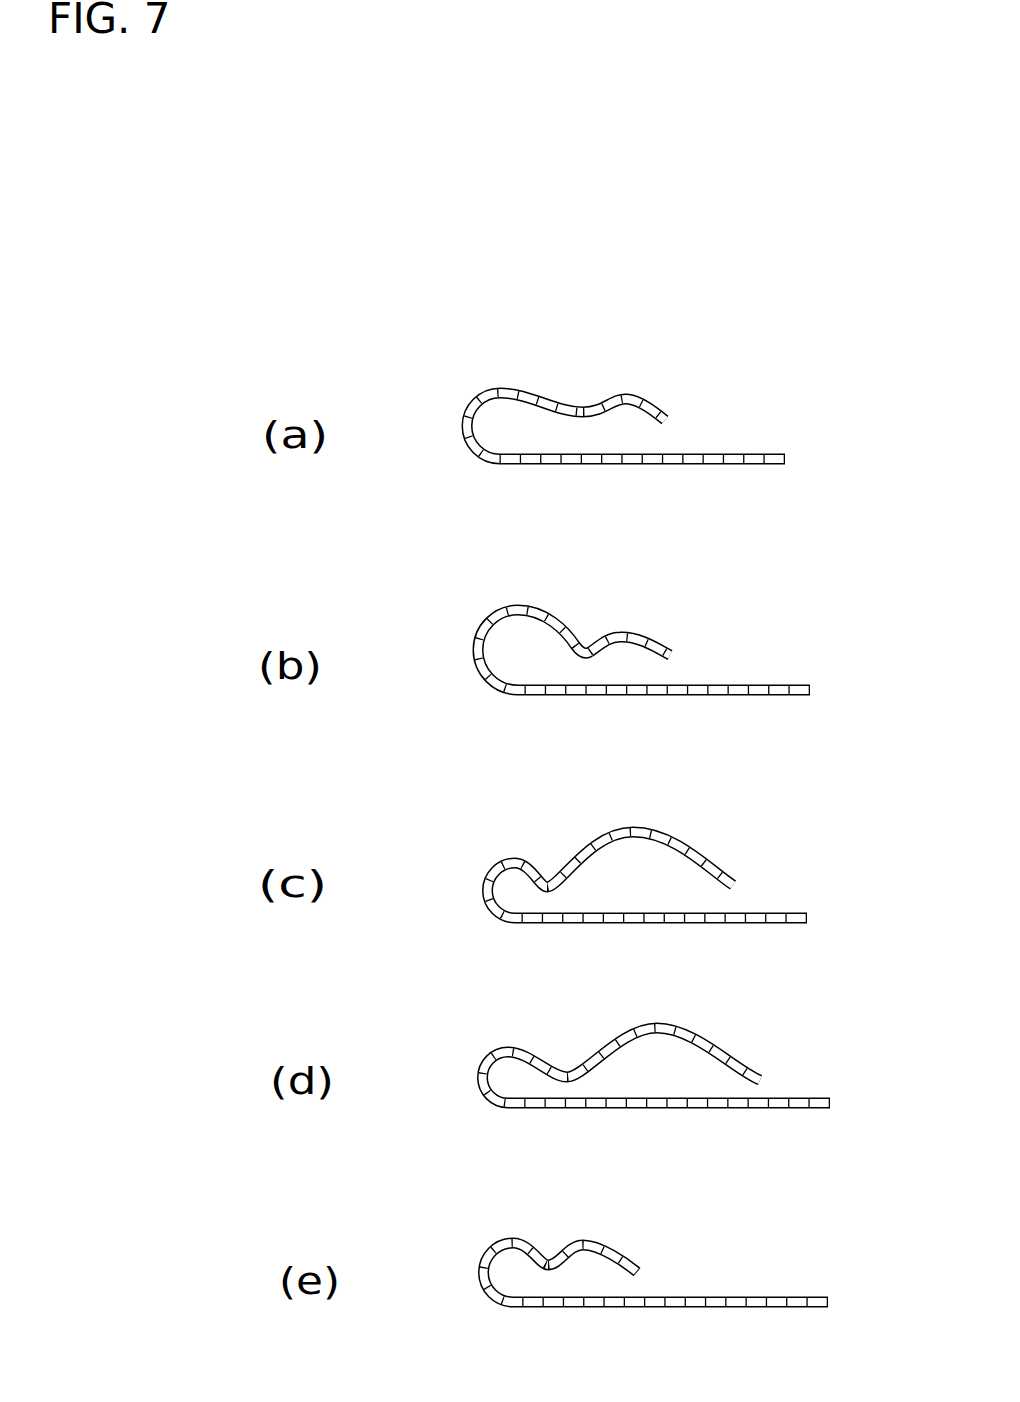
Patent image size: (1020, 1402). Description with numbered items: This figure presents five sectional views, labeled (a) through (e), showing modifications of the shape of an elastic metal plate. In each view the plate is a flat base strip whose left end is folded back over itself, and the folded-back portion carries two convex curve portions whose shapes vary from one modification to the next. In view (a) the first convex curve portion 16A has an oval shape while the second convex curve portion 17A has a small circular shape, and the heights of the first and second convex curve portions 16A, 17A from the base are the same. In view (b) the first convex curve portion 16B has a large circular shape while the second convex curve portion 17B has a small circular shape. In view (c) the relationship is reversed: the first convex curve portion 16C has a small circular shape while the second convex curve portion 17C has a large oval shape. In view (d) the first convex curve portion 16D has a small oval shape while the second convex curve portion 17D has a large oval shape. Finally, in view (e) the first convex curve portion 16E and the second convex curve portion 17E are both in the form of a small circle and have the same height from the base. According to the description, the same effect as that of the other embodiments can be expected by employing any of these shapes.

The first convex curve portion 16A is at (512, 387).
The second convex curve portion 17A is at (630, 393).
The first convex curve portion 16B is at (538, 605).
The second convex curve portion 17B is at (630, 630).
The first convex curve portion 16C is at (508, 857).
The second convex curve portion 17C is at (660, 828).
The first convex curve portion 16D is at (517, 1045).
The second convex curve portion 17D is at (673, 1023).
The first convex curve portion 16E is at (515, 1238).
The second convex curve portion 17E is at (587, 1242).